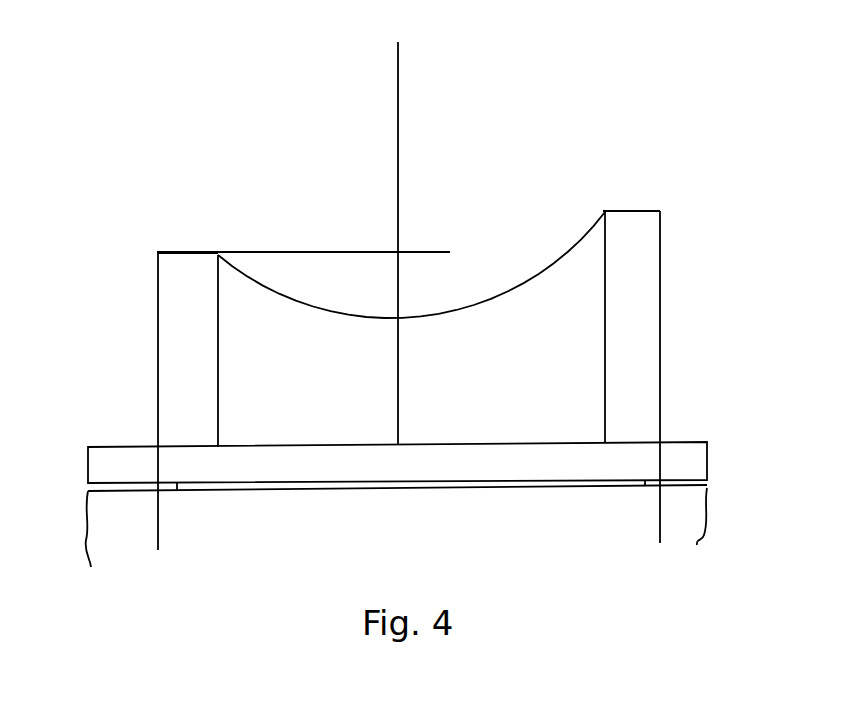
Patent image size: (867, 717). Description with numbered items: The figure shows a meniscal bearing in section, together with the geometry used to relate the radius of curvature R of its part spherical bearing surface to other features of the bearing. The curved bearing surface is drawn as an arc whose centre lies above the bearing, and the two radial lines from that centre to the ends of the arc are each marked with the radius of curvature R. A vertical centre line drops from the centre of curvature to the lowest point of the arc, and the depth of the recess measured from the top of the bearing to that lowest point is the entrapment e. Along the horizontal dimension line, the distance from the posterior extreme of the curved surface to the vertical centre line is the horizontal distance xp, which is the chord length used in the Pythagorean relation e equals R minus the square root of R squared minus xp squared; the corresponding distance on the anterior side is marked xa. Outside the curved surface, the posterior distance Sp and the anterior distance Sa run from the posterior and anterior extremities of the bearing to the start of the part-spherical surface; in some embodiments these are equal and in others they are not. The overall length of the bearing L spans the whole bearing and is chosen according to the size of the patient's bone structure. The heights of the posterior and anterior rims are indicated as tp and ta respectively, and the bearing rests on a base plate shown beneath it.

The radius of curvature R is at (398, 37).
The entrapment e is at (398, 253).
The thickness at posterior side tp is at (130, 255).
The thickness at anterior side ta is at (685, 211).
The posterior distance Sp is at (218, 360).
The horizontal distance xp is at (398, 360).
The anterior half-width of recess xa is at (605, 360).
The anterior distance Sa is at (660, 360).
The length of the bearing L is at (663, 527).